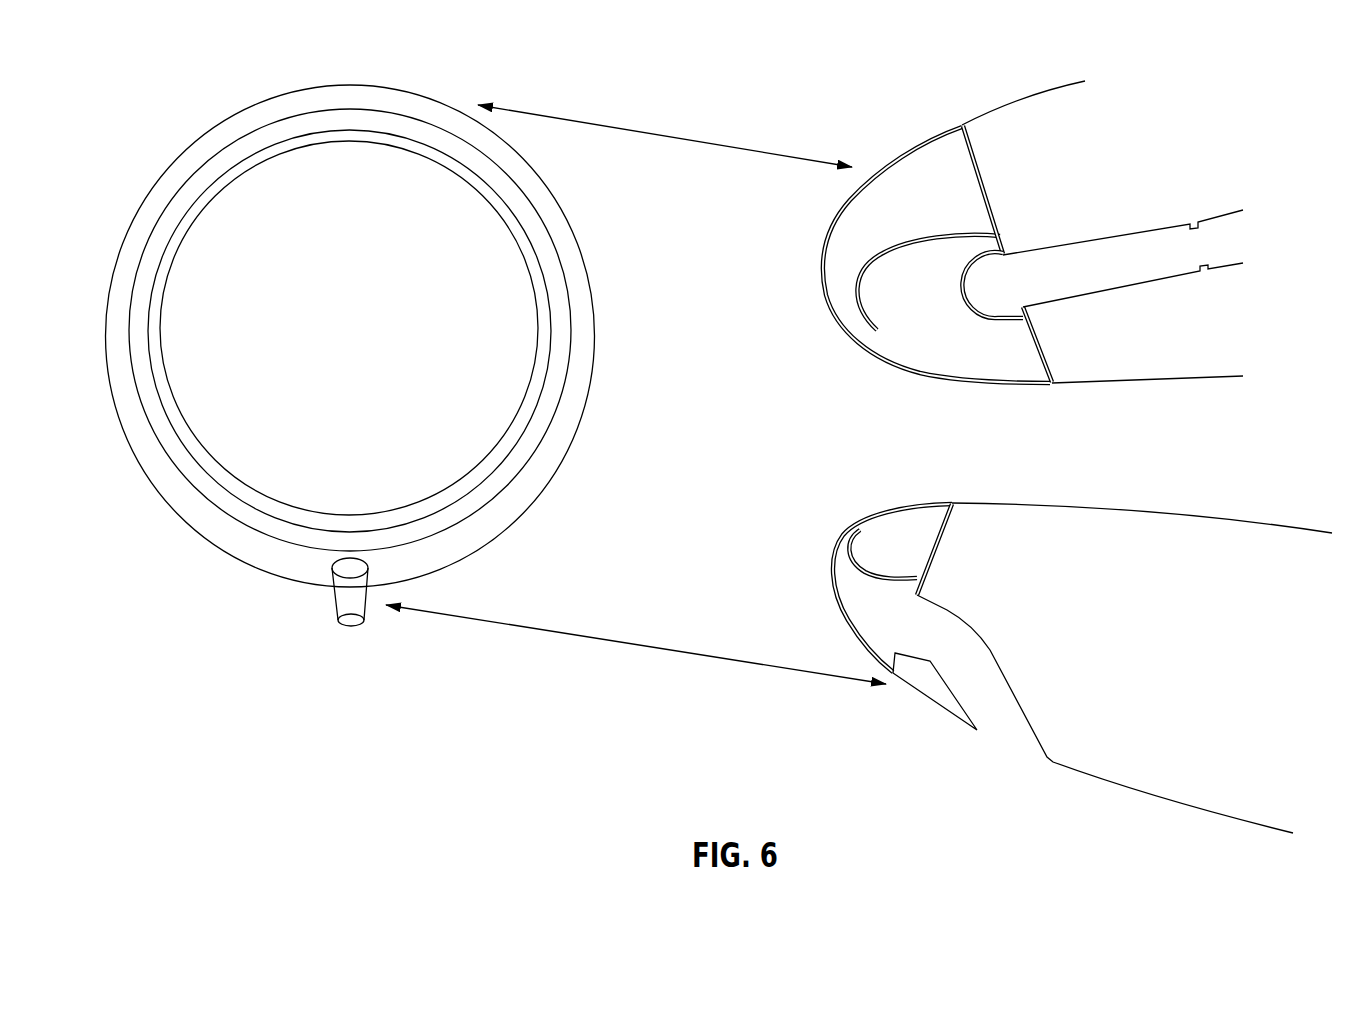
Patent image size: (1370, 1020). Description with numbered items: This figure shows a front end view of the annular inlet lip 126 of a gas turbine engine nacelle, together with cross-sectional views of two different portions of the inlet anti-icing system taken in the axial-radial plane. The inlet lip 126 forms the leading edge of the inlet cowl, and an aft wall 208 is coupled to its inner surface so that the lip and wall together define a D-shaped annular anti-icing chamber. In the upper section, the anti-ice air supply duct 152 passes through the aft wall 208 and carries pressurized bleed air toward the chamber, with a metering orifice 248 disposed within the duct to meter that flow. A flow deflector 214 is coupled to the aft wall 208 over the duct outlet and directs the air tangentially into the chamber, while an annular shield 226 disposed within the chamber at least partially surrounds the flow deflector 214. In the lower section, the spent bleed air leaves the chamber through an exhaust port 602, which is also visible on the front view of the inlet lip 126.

The inlet lip 126 is at (555, 181).
The annular shield 226 is at (568, 268).
The aft wall 208 is at (988, 193).
The flow deflector 214 is at (983, 322).
The metering orifice 248 is at (1208, 223).
The anti-ice air supply duct 152 is at (1212, 272).
The exhaust port 602 is at (332, 604).